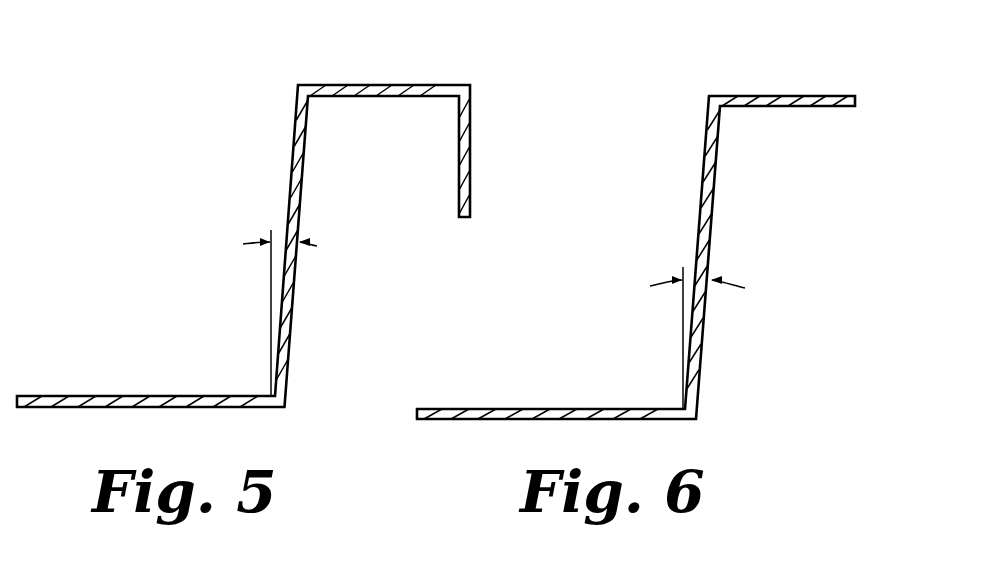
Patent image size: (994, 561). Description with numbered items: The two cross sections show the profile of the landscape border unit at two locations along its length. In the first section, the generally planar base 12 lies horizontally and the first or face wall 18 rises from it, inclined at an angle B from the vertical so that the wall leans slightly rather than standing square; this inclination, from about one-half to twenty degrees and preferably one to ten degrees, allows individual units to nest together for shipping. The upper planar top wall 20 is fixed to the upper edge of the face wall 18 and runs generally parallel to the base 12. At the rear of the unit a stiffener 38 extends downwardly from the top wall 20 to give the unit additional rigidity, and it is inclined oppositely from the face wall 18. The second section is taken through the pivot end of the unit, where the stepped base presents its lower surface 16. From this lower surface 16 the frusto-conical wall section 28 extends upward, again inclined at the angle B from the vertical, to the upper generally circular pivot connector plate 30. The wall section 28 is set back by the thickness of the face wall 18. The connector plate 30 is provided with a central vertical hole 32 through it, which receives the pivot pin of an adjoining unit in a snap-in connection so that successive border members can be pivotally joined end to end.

In FIG. 5, the base 12 is at (77, 396).
In FIG. 5, the first wall 18 is at (295, 143).
In FIG. 5, the top wall 20 is at (362, 85).
In FIG. 5, the stiffener 38 is at (470, 140).
In FIG. 6, the lower surface 16 is at (500, 409).
In FIG. 6, the frusto-conical wall section 28 is at (700, 185).
In FIG. 6, the pivot connector plate 30 is at (815, 96).
In FIG. 6, the central vertical hole 32 is at (787, 106).
In FIG. 5, the angle of inclination B is at (295, 312).
In FIG. 6, the angle of inclination B is at (686, 337).